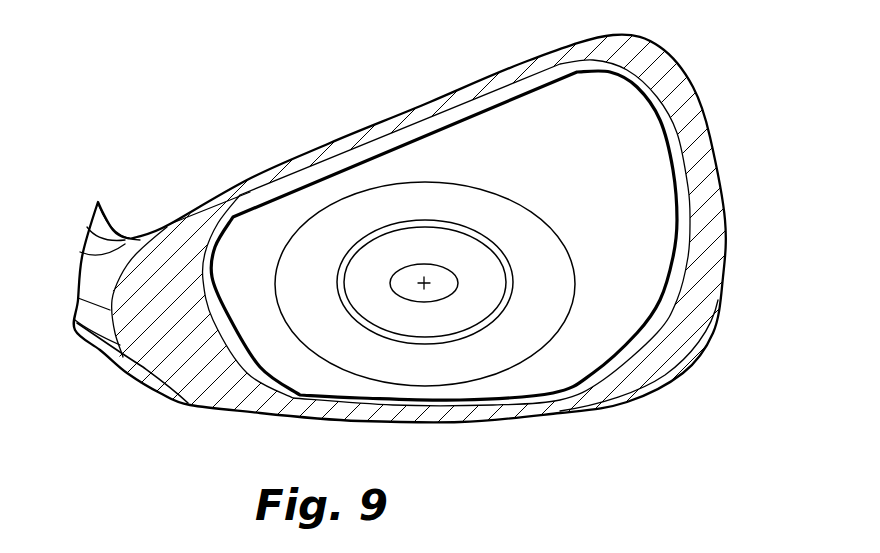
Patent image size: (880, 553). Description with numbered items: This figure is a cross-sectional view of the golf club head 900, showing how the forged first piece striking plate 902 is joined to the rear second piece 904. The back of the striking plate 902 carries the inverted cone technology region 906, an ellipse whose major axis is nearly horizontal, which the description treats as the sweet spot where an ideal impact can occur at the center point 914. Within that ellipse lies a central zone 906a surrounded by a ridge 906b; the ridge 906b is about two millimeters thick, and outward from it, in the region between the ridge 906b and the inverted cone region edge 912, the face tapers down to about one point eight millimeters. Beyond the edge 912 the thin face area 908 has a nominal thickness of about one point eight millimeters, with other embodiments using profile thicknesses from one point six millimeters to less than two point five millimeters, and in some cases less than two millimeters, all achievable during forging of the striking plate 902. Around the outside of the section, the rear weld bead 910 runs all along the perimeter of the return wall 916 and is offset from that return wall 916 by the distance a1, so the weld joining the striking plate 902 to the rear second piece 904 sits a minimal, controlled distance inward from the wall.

The golf club head 900 is at (160, 103).
The first piece striking plate 902 is at (419, 154).
The rear second piece 904 is at (159, 374).
The inverted cone technology region 906 is at (543, 322).
The central zone 906a is at (450, 296).
The surrounding ridge 906b is at (457, 334).
The thin face area 908 is at (607, 138).
The rear weld bead 910 is at (625, 80).
The inverted cone region edge 912 is at (573, 257).
The center point 914 is at (424, 285).
The return wall 916 is at (603, 62).
The offset distance a1 is at (302, 217).